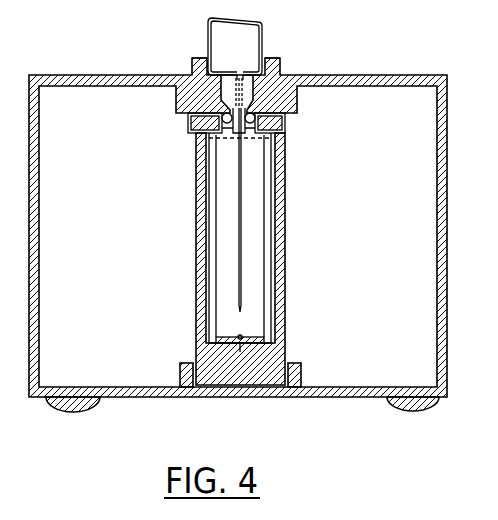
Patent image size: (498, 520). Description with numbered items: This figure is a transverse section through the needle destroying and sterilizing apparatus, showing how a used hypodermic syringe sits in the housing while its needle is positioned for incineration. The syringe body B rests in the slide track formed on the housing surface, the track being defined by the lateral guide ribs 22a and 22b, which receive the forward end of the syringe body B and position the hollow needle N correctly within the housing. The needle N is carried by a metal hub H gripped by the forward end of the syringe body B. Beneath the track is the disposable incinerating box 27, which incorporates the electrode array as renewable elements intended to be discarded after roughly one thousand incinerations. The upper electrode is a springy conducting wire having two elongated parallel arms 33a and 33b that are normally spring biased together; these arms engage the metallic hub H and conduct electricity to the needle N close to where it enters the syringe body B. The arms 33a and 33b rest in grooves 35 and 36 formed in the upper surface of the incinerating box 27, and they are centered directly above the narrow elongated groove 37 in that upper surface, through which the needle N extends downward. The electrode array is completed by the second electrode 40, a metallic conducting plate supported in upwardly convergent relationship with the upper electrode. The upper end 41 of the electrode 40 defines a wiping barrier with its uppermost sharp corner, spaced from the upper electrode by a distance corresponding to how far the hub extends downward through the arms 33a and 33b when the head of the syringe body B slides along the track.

The syringe body B is at (262, 38).
The lateral guide rib 22a is at (282, 70).
The lateral guide rib 22b is at (203, 58).
The elongated parallel arm 33a is at (291, 103).
The elongated parallel arm 33b is at (188, 127).
The groove 35 is at (205, 133).
The groove 36 is at (284, 128).
The metal hub H is at (268, 138).
The narrow elongated groove 37 is at (222, 150).
The upper end of the electrode 41 is at (258, 148).
The hollow needle N is at (243, 238).
The disposable incinerating box 27 is at (284, 285).
The second electrode 40 is at (253, 310).